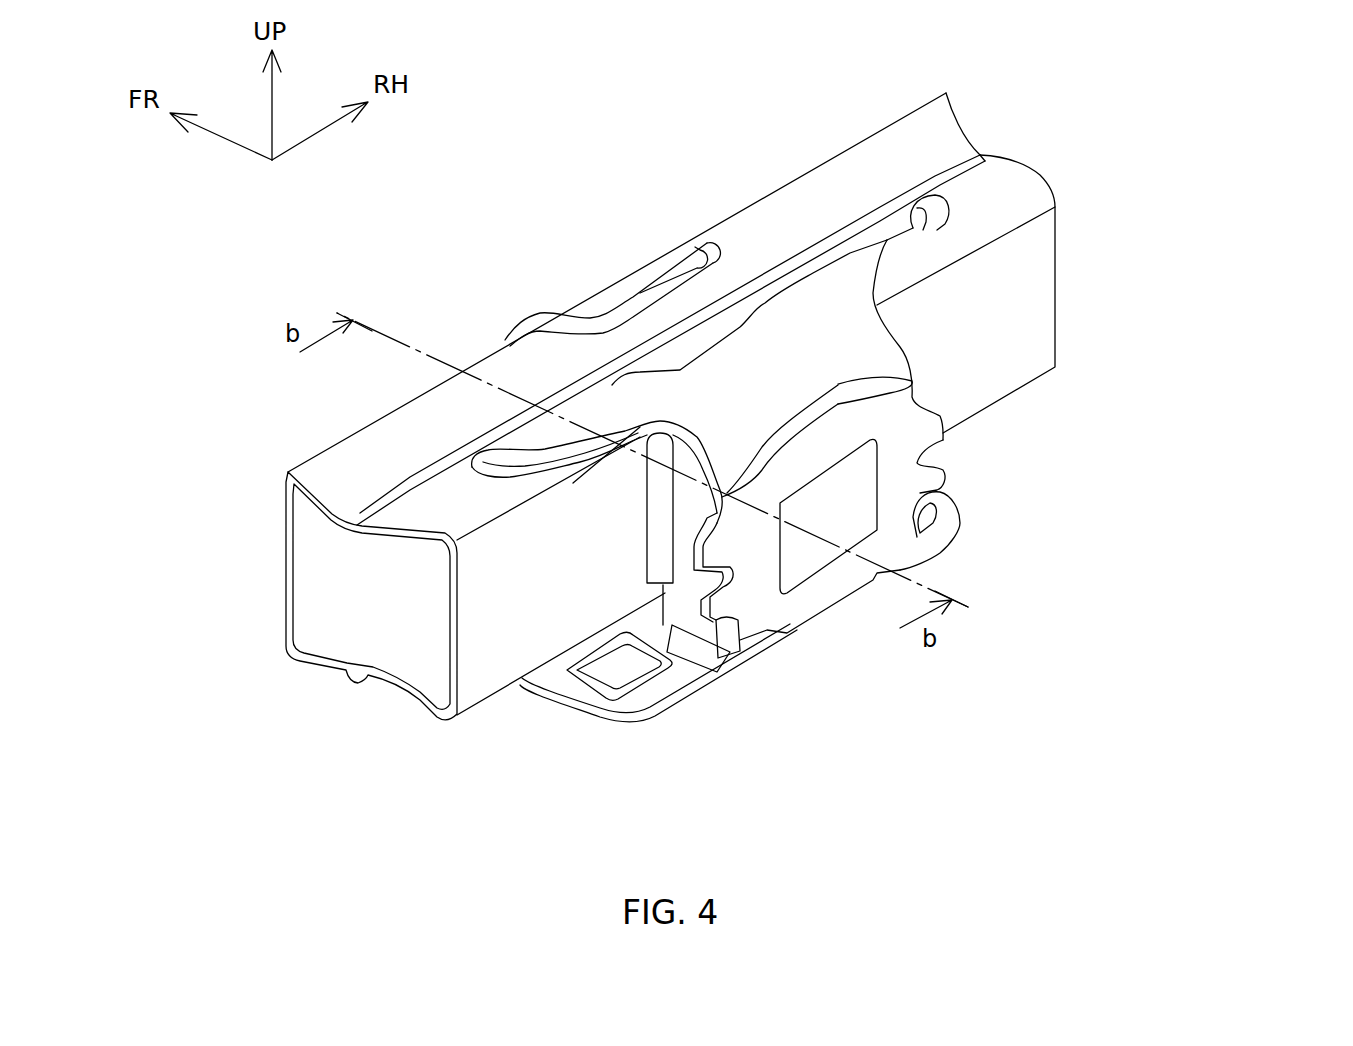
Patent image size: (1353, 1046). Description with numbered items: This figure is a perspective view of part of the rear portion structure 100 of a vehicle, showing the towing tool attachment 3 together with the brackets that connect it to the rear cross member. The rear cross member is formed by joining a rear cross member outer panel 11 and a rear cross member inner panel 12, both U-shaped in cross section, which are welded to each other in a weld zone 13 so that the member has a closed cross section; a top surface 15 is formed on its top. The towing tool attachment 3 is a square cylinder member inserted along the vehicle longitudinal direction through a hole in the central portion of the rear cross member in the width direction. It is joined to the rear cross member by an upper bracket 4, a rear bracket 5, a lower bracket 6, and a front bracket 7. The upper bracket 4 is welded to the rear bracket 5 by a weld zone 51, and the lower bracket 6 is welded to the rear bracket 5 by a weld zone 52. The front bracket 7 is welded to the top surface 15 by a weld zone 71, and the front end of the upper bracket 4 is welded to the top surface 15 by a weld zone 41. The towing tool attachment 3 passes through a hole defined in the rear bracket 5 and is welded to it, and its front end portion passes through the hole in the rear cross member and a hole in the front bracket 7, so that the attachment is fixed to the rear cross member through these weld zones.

The rear portion structure 100 is at (1135, 520).
The rear cross member outer panel 11 is at (328, 478).
The rear cross member inner panel 12 is at (481, 677).
The weld zone 13 is at (940, 167).
The top surface 15 is at (777, 222).
The front bracket 7 is at (627, 282).
The weld zone 71 is at (712, 248).
The upper bracket 4 is at (840, 343).
The weld zone 41 is at (907, 207).
The weld zone 51 is at (872, 387).
The rear bracket 5 is at (910, 487).
The towing tool attachment 3 is at (850, 483).
The weld zone 52 is at (761, 643).
The lower bracket 6 is at (560, 683).